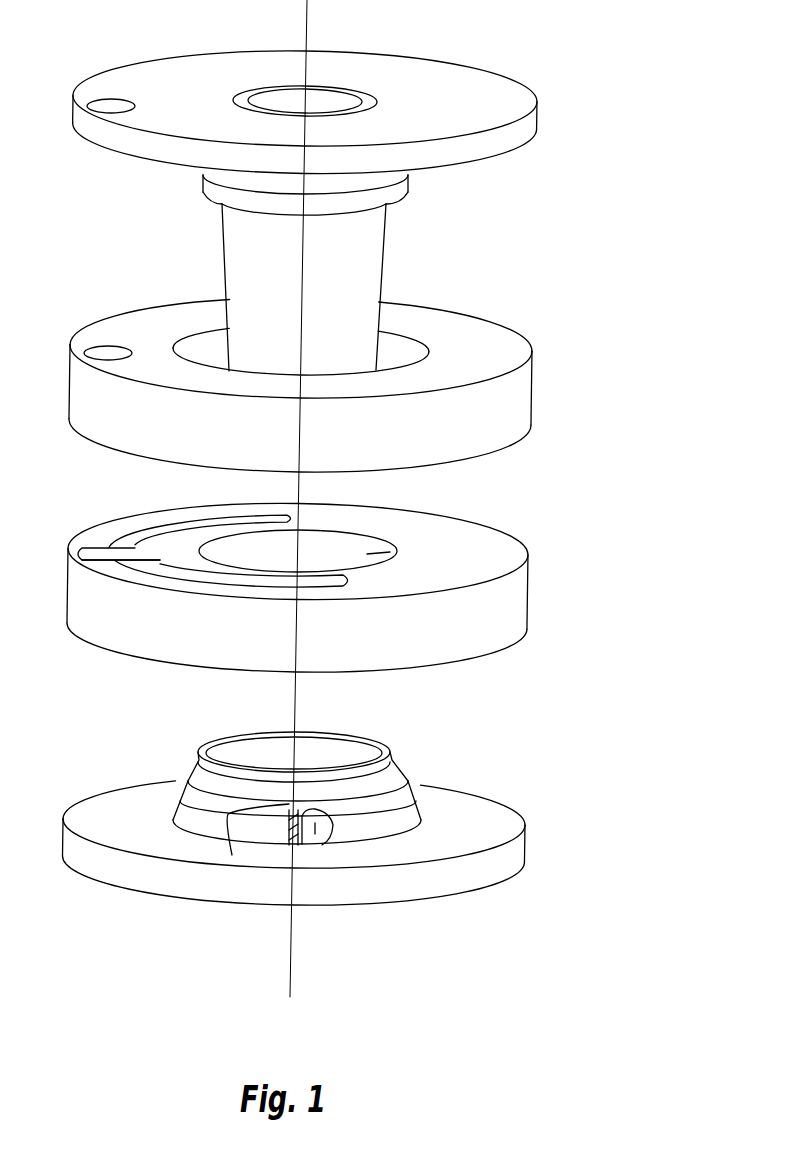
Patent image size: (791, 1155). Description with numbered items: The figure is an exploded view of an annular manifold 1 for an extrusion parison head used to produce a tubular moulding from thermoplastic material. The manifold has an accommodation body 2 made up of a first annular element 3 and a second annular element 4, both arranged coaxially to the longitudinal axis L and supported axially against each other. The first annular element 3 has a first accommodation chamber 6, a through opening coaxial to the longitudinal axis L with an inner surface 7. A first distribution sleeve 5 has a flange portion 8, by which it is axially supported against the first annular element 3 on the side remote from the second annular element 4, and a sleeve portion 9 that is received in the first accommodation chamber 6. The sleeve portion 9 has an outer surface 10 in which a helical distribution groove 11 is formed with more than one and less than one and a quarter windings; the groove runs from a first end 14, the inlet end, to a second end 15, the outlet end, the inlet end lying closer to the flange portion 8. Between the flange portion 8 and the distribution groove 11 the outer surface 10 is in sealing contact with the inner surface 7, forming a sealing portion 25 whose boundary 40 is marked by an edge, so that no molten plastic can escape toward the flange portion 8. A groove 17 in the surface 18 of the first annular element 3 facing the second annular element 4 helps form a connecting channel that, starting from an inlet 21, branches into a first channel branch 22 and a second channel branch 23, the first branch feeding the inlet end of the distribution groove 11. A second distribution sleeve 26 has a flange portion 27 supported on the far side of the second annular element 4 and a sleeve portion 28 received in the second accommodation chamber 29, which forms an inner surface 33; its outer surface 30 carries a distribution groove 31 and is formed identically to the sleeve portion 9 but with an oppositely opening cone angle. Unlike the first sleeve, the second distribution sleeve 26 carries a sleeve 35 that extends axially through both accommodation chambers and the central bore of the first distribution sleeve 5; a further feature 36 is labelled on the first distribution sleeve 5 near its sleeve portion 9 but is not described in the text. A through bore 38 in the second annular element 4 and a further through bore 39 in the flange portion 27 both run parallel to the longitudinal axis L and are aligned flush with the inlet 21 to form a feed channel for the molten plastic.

The annular manifold 1 is at (390, 200).
The accommodation body 2 is at (395, 468).
The first annular element 3 is at (331, 575).
The second annular element 4 is at (333, 361).
The first distribution sleeve 5 is at (362, 818).
The first accommodation chamber 6 is at (332, 523).
The inner surface 7 is at (446, 521).
The flange portion 8 is at (297, 826).
The sleeve portion 9 is at (330, 746).
The outer surface 10 is at (248, 755).
The distribution groove 11 is at (326, 774).
The first end 14 is at (316, 879).
The second end 15 is at (298, 733).
The groove 17 is at (117, 624).
The surface 18 is at (330, 551).
The inlet 21 is at (107, 511).
The first channel branch 22 is at (231, 607).
The second channel branch 23 is at (200, 505).
The sealing portion 25 is at (297, 866).
The second distribution sleeve 26 is at (368, 98).
The flange portion 27 is at (339, 150).
The sleeve portion 28 is at (358, 210).
The second accommodation chamber 29 is at (309, 300).
The outer surface 30 is at (348, 177).
The distribution groove 31 is at (176, 207).
The inner surface 33 is at (344, 326).
The sleeve 35 is at (260, 287).
The inner rim 36 is at (294, 726).
The through bore 38 is at (99, 313).
The through bore 39 is at (104, 71).
The boundary 40 is at (254, 876).
The longitudinal axis L is at (263, 498).